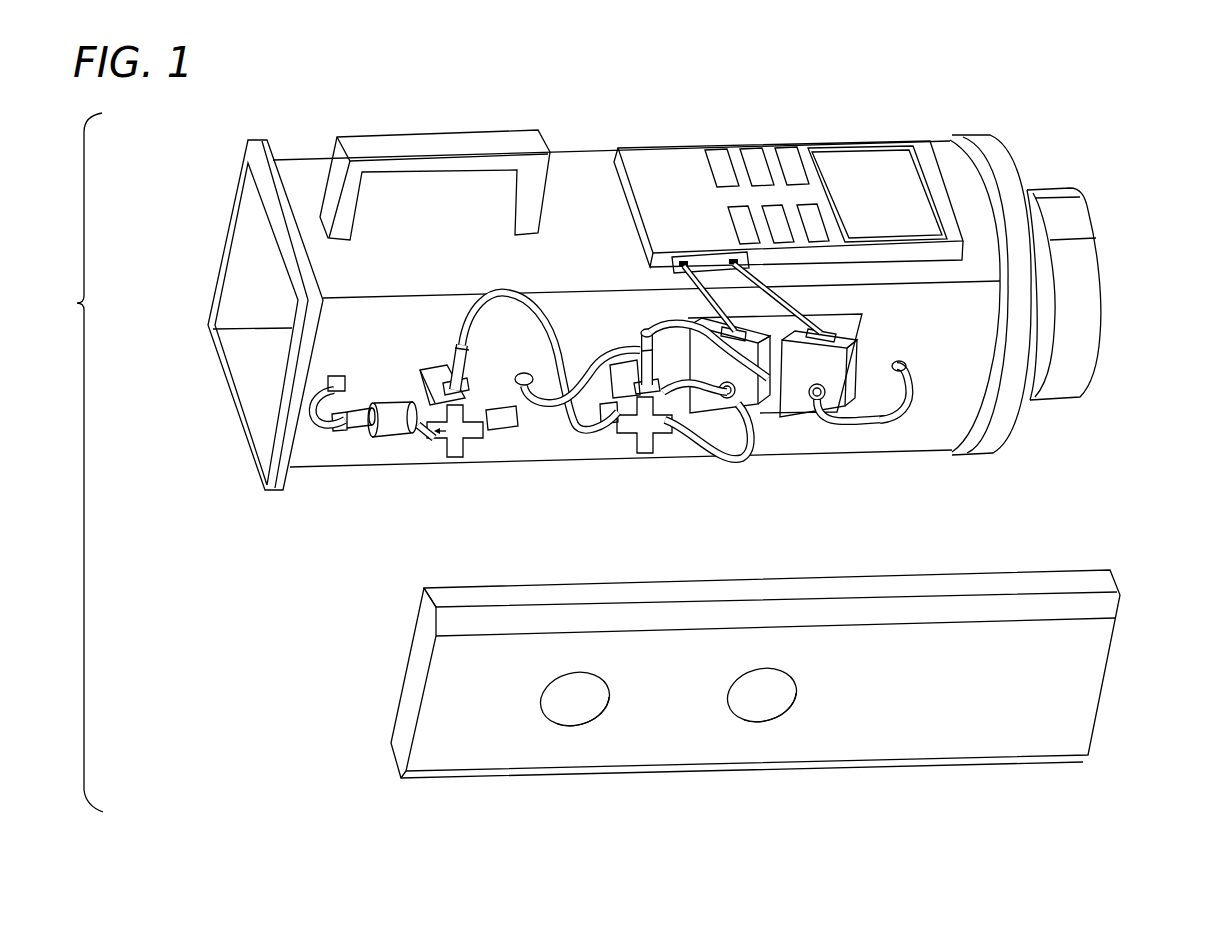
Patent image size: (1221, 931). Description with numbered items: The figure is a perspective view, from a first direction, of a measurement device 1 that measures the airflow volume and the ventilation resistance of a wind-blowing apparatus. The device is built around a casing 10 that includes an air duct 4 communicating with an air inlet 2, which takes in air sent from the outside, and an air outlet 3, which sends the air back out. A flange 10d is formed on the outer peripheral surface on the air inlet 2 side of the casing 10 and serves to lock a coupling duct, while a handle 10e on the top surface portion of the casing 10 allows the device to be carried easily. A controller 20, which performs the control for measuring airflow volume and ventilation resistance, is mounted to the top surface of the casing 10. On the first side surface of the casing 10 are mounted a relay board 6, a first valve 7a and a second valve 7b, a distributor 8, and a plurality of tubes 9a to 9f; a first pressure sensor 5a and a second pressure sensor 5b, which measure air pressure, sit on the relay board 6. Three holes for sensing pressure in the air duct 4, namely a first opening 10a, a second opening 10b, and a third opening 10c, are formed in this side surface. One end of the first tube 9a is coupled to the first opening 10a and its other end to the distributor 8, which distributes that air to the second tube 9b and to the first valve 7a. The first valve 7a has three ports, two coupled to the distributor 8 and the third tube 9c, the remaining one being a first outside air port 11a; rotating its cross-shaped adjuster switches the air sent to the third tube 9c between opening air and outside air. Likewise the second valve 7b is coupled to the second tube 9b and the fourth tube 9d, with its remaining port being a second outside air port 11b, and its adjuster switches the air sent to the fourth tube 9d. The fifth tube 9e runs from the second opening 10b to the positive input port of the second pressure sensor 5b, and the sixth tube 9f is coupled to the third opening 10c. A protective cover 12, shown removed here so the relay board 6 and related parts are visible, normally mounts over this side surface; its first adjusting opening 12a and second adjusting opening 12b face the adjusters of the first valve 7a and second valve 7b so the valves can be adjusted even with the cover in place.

The measurement device 1 is at (601, 128).
The air inlet 2 is at (260, 388).
The air outlet 3 is at (1100, 378).
The air duct 4 is at (248, 270).
The first pressure sensor 5a is at (708, 413).
The second pressure sensor 5b is at (803, 417).
The relay board 6 is at (764, 413).
The first valve 7a is at (462, 457).
The second valve 7b is at (655, 453).
The distributor 8 is at (392, 440).
The first tube 9a is at (318, 431).
The second tube 9b is at (420, 441).
The third tube 9c is at (541, 322).
The fourth tube 9d is at (647, 334).
The fifth tube 9e is at (609, 360).
The sixth tube 9f is at (843, 430).
The casing 10 is at (307, 163).
The first opening 10a is at (343, 432).
The second opening 10b is at (513, 430).
The third opening 10c is at (902, 430).
The flange 10d is at (258, 147).
The handle 10e is at (447, 147).
The first outside air port 11a is at (515, 412).
The second outside air port 11b is at (657, 392).
The protective cover 12 is at (855, 708).
The first adjusting opening 12a is at (542, 674).
The second adjusting opening 12b is at (728, 674).
The controller 20 is at (803, 150).